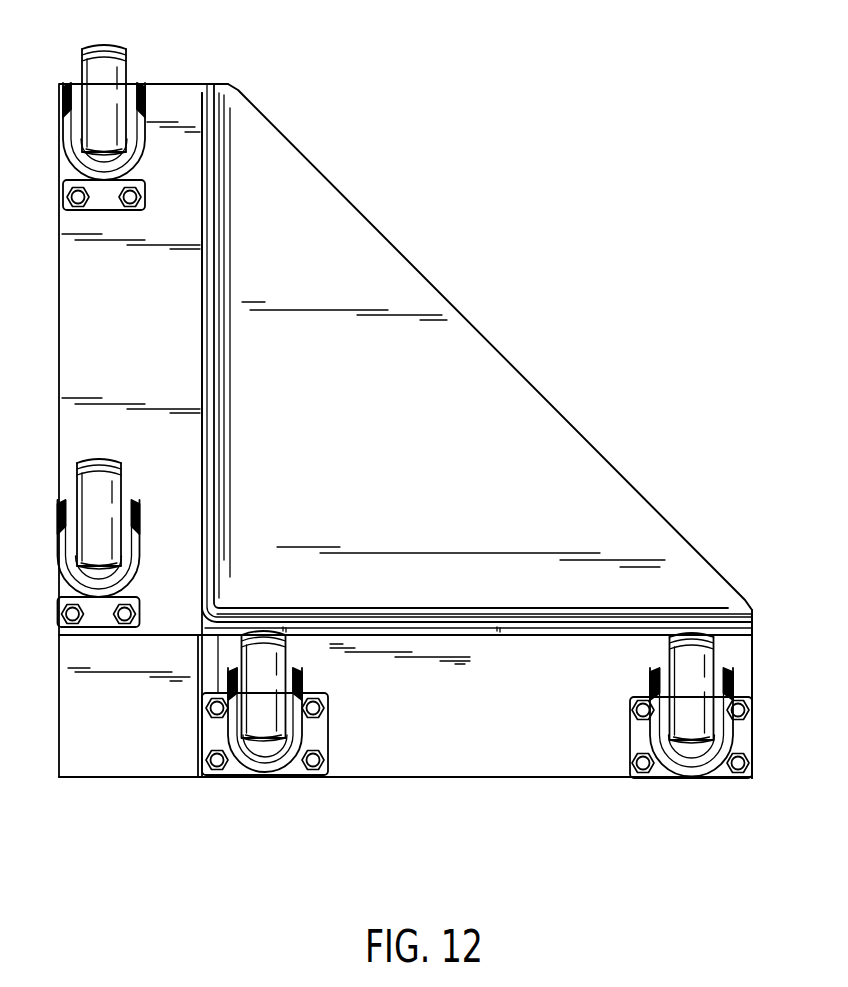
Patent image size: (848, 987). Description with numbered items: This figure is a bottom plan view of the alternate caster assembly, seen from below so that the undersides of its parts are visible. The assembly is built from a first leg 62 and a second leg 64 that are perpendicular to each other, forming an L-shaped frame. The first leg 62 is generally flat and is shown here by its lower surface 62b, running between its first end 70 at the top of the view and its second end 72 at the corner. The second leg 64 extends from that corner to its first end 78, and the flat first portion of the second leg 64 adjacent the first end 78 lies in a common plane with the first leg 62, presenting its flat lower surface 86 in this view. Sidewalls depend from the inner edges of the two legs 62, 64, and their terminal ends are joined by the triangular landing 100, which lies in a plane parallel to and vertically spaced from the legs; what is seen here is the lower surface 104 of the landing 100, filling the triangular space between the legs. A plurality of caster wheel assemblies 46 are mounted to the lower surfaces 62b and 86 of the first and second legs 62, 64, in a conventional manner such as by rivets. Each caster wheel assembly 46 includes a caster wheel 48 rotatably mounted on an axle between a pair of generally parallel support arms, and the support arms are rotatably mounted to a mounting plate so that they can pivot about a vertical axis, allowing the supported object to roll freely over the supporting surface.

The caster wheel assembly 46 is at (62, 142).
The caster wheel 48 is at (107, 53).
The first leg 62 is at (58, 318).
The lower surface 62b is at (145, 343).
The second leg 64 is at (553, 780).
The first end 70 is at (163, 84).
The second end 72 is at (92, 782).
The first end 78 is at (756, 685).
The lower surface 86 is at (515, 716).
The triangular landing 100 is at (437, 284).
The lower surface 104 is at (437, 491).